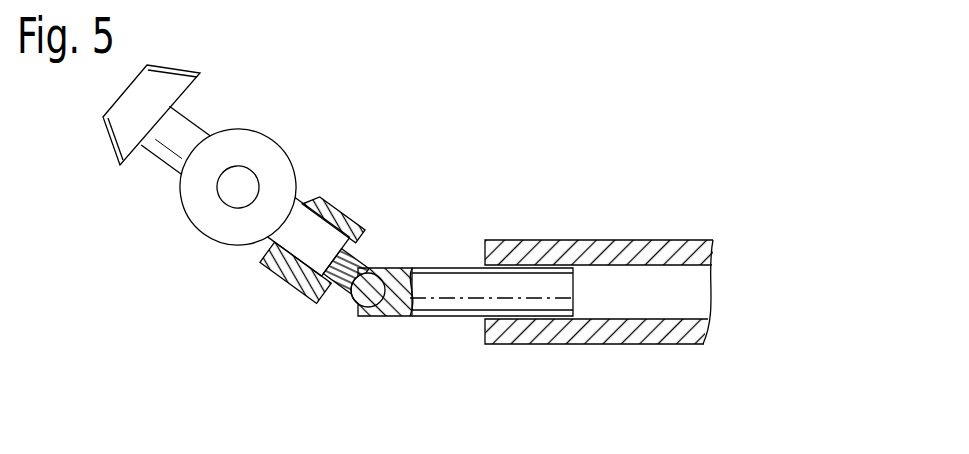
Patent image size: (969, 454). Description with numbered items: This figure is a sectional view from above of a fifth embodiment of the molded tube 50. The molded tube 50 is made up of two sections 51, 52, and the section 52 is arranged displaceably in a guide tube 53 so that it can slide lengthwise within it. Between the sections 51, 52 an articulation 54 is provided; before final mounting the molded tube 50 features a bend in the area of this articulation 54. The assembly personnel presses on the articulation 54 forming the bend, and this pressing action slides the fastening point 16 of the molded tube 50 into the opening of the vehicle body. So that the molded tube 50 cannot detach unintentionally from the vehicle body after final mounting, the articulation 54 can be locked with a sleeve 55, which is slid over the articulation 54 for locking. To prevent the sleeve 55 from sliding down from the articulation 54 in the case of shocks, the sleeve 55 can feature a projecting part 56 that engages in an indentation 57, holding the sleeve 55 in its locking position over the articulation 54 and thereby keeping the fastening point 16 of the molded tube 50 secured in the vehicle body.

The fastening point 16 is at (113, 146).
The molded tube 50 is at (318, 150).
The section 51 is at (278, 271).
The section 52 is at (437, 301).
The guide tube 53 is at (543, 253).
The articulation 54 is at (345, 315).
The sleeve 55 is at (305, 297).
The projecting part 56 is at (350, 247).
The indentation 57 is at (360, 262).